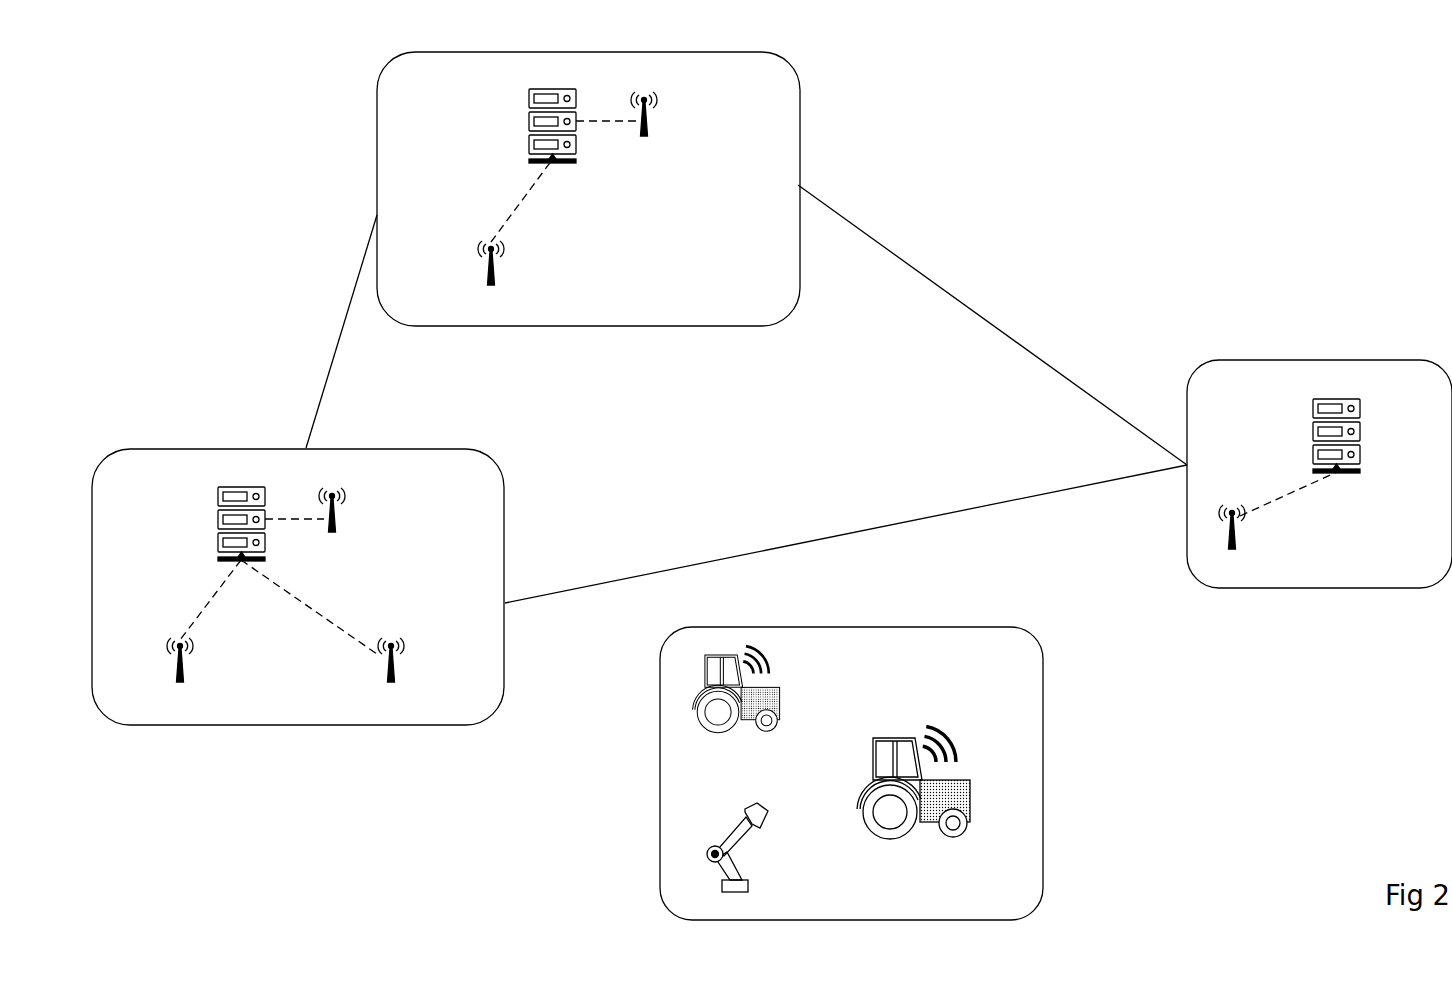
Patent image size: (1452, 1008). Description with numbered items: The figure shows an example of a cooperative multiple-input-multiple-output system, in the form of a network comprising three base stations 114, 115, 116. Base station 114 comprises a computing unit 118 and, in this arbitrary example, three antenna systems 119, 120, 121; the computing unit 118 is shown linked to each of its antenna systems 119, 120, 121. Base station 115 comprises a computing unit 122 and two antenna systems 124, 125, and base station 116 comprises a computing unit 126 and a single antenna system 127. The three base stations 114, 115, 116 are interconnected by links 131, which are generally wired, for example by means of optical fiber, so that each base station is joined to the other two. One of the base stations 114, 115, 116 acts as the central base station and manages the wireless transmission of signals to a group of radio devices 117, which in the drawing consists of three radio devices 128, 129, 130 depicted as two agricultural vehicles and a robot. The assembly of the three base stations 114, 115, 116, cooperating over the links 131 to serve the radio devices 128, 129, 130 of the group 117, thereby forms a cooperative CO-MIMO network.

The base station 114 is at (382, 726).
The base station 115 is at (680, 52).
The base station 116 is at (1373, 360).
The group of radio devices 117 is at (1043, 750).
The computing unit 118 is at (218, 519).
The antenna system 119 is at (338, 519).
The antenna system 120 is at (186, 670).
The antenna system 121 is at (397, 670).
The computing unit 122 is at (529, 121).
The antenna system 124 is at (650, 123).
The antenna system 125 is at (497, 270).
The computing unit 126 is at (1360, 424).
The antenna system 127 is at (1238, 538).
The radio device 128 is at (780, 700).
The radio device 129 is at (970, 795).
The radio device 130 is at (748, 886).
The links 131 is at (323, 383).